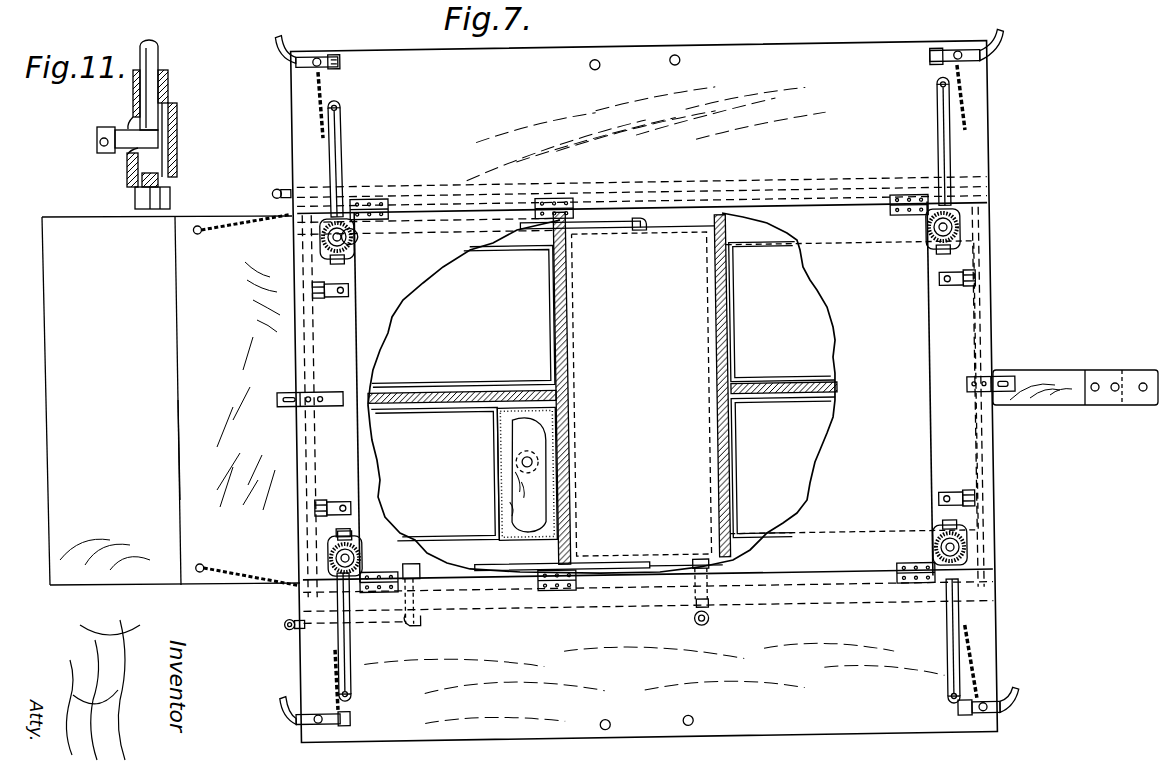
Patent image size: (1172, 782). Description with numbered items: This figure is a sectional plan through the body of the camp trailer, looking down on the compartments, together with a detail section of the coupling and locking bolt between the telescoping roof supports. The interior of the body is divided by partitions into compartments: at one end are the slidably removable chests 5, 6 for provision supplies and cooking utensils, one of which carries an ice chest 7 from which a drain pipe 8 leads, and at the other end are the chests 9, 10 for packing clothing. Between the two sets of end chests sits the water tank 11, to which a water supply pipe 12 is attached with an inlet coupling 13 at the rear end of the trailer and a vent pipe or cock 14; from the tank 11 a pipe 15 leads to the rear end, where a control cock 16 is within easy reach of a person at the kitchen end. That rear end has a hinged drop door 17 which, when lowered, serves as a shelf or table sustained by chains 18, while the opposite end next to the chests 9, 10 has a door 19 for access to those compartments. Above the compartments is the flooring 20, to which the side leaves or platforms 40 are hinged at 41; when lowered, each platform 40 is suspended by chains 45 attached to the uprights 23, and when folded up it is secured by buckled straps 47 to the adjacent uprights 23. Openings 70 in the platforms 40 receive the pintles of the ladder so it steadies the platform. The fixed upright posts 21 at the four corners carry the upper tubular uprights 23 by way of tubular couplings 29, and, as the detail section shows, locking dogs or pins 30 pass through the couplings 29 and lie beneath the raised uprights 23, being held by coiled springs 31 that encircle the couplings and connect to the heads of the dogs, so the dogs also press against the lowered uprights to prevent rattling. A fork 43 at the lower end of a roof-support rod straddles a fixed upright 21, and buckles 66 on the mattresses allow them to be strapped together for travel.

In FIG. 7, the chest 5 is at (462, 316).
In FIG. 7, the chest 6 is at (435, 474).
In FIG. 7, the ice chest 7 is at (497, 478).
In FIG. 7, the drain pipe 8 is at (537, 462).
In FIG. 7, the chest 9 is at (784, 467).
In FIG. 7, the chest 10 is at (782, 311).
In FIG. 7, the tank 11 is at (617, 301).
In FIG. 7, the water supply pipe 12 is at (604, 570).
In FIG. 7, the inlet coupling 13 is at (280, 620).
In FIG. 7, the vent pipe or cock 14 is at (705, 630).
In FIG. 7, the pipe 15 is at (350, 205).
In FIG. 7, the control cock 16 is at (275, 186).
In FIG. 7, the hinged drop door 17 is at (171, 400).
In FIG. 7, the chains 18 is at (214, 409).
In FIG. 7, the door 19 is at (990, 447).
In FIG. 7, the flooring 20 is at (861, 464).
In FIG. 11, the upright posts 21 is at (137, 198).
In FIG. 7, the uprights 23 is at (355, 248).
In FIG. 11, the uprights 23 is at (152, 55).
In FIG. 7, the tubular couplings 29 is at (328, 548).
In FIG. 11, the tubular couplings 29 is at (177, 138).
In FIG. 11, the locking dogs or pins 30 is at (128, 136).
In FIG. 7, the coiled springs 31 is at (350, 283).
In FIG. 7, the leaves or platforms 40 is at (644, 392).
In FIG. 7, the hinges 41 is at (893, 212).
In FIG. 7, the fork 43 is at (285, 230).
In FIG. 7, the chains 45 is at (318, 108).
In FIG. 7, the buckled straps 47 is at (282, 50).
In FIG. 7, the buckles 66 is at (977, 500).
In FIG. 7, the openings 70 is at (597, 60).